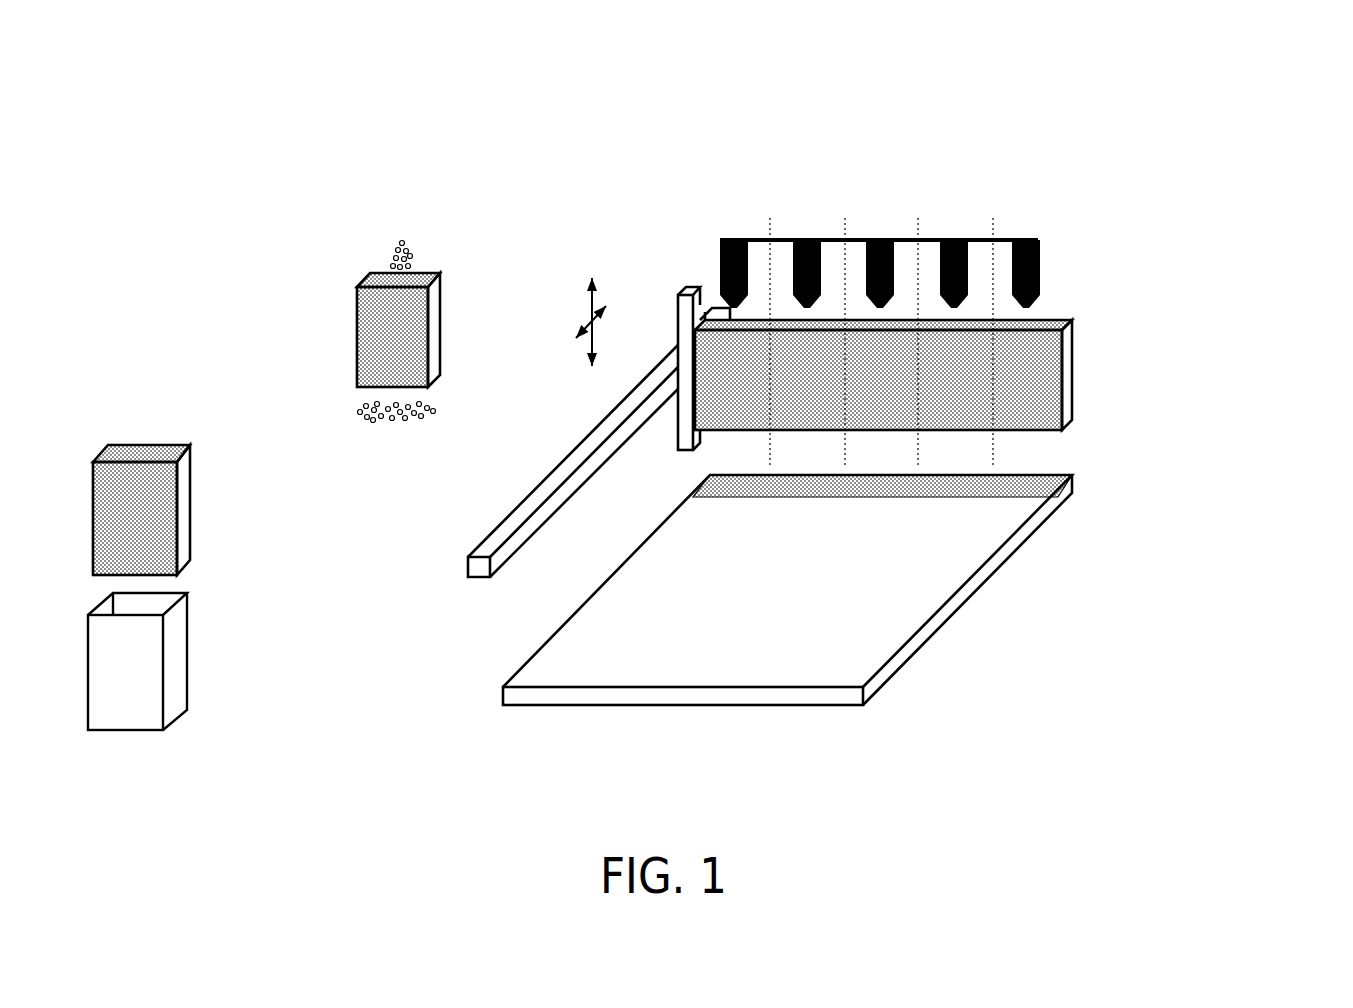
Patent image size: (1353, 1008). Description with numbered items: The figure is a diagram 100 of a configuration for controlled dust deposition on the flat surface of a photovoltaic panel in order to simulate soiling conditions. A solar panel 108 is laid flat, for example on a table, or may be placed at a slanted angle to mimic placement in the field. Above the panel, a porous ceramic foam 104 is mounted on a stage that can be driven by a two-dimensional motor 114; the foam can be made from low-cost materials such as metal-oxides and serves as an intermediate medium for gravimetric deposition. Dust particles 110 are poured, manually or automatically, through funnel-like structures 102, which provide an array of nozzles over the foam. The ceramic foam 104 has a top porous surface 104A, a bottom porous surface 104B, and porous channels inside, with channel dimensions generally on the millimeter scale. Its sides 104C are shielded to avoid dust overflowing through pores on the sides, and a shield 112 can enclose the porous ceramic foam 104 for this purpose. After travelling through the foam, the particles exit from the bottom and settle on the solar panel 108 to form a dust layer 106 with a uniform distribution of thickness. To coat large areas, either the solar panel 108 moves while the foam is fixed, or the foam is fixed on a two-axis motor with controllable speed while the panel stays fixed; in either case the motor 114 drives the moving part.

The diagram 100 is at (836, 108).
The funnel-like structures 102 is at (1075, 265).
The porous ceramic foam 104 is at (1094, 379).
The top porous surface 104A is at (438, 260).
The bottom porous surface 104B is at (352, 400).
The sides 104C is at (206, 506).
The dust layer 106 is at (1093, 477).
The solar panel 108 is at (1004, 569).
The dust particles 110 is at (372, 238).
The shield 112 is at (192, 649).
The 2-D motor 114 is at (665, 314).